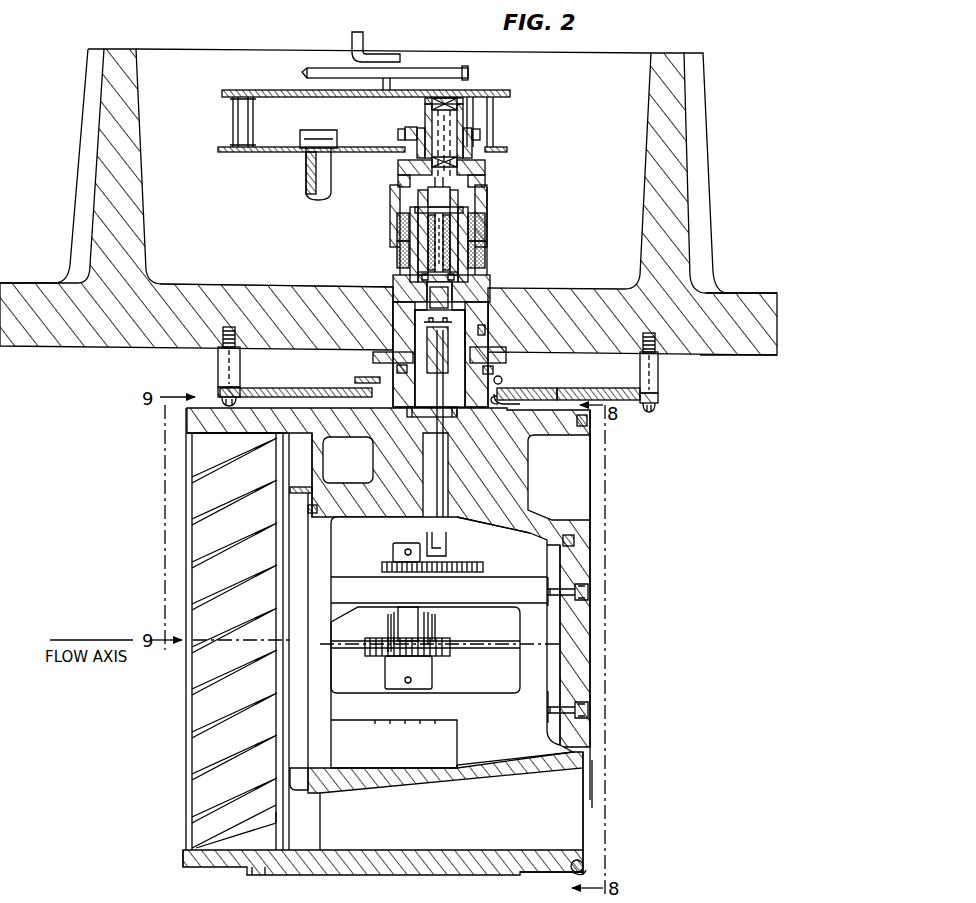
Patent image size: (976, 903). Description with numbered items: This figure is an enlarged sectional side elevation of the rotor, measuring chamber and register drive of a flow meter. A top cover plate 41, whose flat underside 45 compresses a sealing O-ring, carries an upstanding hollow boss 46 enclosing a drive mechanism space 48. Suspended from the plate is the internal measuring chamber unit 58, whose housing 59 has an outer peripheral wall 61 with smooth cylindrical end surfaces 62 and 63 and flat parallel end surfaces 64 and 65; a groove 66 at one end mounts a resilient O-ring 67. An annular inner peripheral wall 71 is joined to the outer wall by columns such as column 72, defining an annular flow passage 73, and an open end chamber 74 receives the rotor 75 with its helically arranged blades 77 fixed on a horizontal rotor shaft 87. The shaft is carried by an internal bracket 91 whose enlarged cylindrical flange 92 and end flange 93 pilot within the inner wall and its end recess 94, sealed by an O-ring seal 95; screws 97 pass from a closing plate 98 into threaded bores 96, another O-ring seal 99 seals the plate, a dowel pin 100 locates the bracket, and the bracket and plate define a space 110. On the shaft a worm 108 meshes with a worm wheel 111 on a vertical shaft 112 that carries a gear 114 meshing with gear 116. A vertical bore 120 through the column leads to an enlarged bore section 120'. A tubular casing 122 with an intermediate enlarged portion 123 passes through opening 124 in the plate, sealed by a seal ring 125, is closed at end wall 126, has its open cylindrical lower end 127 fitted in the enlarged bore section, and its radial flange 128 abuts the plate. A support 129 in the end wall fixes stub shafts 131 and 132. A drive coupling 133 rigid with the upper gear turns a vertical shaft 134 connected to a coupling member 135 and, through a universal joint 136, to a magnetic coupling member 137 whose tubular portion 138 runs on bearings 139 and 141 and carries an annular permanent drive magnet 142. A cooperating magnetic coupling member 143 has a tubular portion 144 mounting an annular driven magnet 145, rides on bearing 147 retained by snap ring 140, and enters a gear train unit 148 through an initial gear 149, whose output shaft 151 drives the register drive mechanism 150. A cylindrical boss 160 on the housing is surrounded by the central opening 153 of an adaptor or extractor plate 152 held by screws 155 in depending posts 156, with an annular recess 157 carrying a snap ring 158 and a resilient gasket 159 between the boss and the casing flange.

The top cover plate 41 is at (750, 293).
The flat underside of plate 45 is at (706, 355).
The upstanding hollow boss 46 is at (678, 154).
The drive mechanism space 48 is at (606, 219).
The internal measuring chamber unit 58 is at (572, 509).
The housing 59 is at (192, 412).
The outer peripheral wall 61 is at (336, 866).
The cylindrical peripheral surface 62 is at (212, 868).
The cylindrical peripheral surface 63 is at (528, 864).
The end surface 64 is at (184, 838).
The end surface 65 is at (596, 808).
The groove 66 is at (578, 858).
The resilient O-ring 67 is at (590, 864).
The annular inner peripheral wall 71 is at (416, 778).
The column 72 is at (522, 470).
The annular flow passage 73 is at (519, 811).
The open end chamber 74 is at (260, 862).
The rotor 75 is at (198, 710).
The helically arranged peripheral blades 77 is at (198, 548).
The horizontal rotor shaft 87 is at (492, 648).
The internal bracket 91 is at (490, 572).
The enlarged cylindrical flange 92 is at (318, 567).
The cylindrical end flange 93 is at (315, 543).
The cylindrical end recess 94 is at (290, 780).
The resilient O-ring seal 95 is at (308, 509).
The threaded bores 96 is at (512, 585).
The screws 97 is at (591, 592).
The plate 98 is at (592, 636).
The resilient O-ring seal 99 is at (575, 545).
The dowel pin 100 is at (302, 487).
The worm 108 is at (442, 618).
The space 110 is at (494, 746).
The worm wheel 111 is at (372, 650).
The vertical shaft 112 is at (408, 612).
The gear 114 is at (387, 556).
The gear 116 is at (470, 562).
The vertical bore 120 is at (374, 460).
The enlarged bore section 120' is at (535, 458).
The tubular casing 122 is at (412, 274).
The intermediate enlarged portion 123 is at (478, 310).
The opening 124 is at (378, 298).
The radially compressed seal ring 125 is at (487, 330).
The end wall 126 is at (460, 192).
The open cylindrical lower end 127 is at (432, 403).
The radial flange 128 is at (508, 356).
The support 129 is at (430, 197).
The stub shaft 131 is at (452, 246).
The stub shaft 132 is at (446, 122).
The drive coupling 133 is at (433, 542).
The vertical shaft 134 is at (440, 490).
The coupling member 135 is at (428, 343).
The universal joint 136 is at (452, 403).
The magnetic coupling member 137 is at (470, 292).
The tubular portion 138 is at (486, 224).
The bearing 139 is at (465, 208).
The snap ring 140 is at (462, 102).
The bearing 141 is at (470, 272).
The annular permanent drive magnet 142 is at (486, 254).
The magnetic coupling member 143 is at (488, 178).
The tubular portion 144 is at (397, 234).
The annular permanent driven magnet 145 is at (397, 259).
The bearing 147 is at (485, 167).
The gear train unit 148 is at (260, 88).
The initial gear 149 is at (410, 128).
The register drive mechanism 150 is at (390, 48).
The output shaft 151 is at (392, 84).
The adaptor or extractor plate 152 is at (598, 397).
The central opening 153 is at (548, 397).
The screws 155 is at (229, 404).
The depending posts 156 is at (218, 362).
The annular recess 157 is at (494, 371).
The snap ring 158 is at (503, 383).
The resilient gasket 159 is at (397, 369).
The rigid cylindrical boss 160 is at (345, 392).